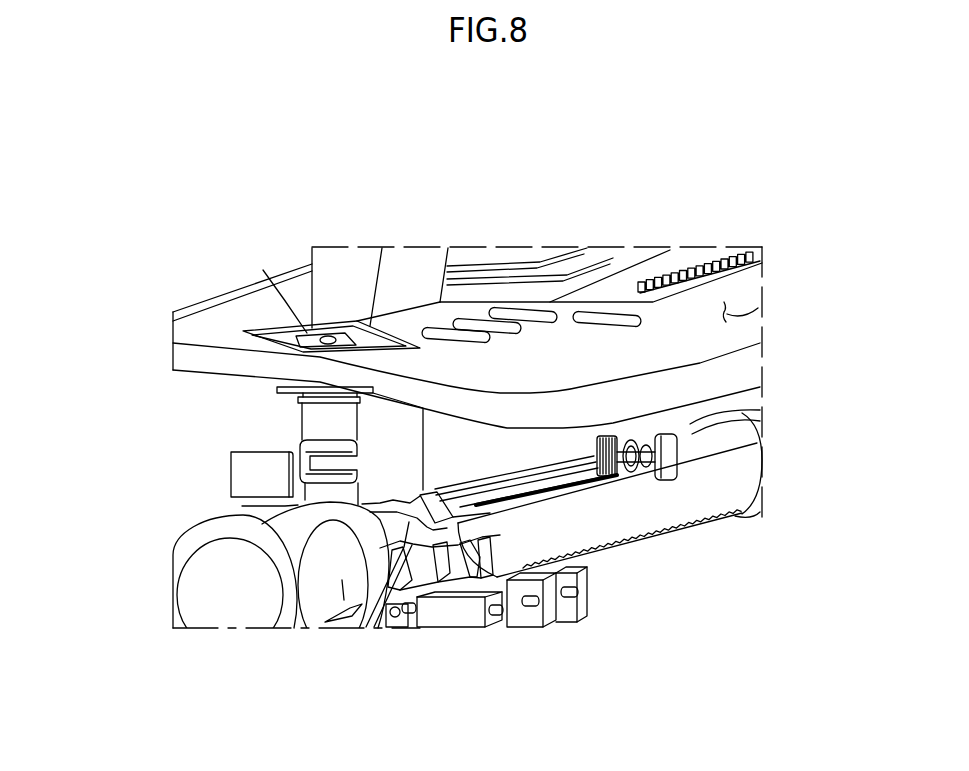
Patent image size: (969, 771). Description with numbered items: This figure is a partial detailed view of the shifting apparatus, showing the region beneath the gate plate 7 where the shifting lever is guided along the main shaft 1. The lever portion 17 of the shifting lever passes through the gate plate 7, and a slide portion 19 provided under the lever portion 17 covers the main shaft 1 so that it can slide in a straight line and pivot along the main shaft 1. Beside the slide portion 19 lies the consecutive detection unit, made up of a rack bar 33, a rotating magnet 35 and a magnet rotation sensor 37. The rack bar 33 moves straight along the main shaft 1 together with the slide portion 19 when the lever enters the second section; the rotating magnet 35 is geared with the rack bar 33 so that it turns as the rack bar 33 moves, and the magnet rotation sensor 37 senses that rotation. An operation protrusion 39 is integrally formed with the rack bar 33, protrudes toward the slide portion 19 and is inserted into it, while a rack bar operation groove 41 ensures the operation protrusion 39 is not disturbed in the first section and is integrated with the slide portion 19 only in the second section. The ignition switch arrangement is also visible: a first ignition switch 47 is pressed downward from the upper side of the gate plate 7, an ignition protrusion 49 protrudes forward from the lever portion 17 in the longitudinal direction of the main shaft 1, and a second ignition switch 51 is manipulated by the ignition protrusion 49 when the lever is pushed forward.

The main shaft 1 is at (343, 580).
The gate plate 7 is at (758, 309).
The lever portion 17 is at (336, 291).
The slide portion 19 is at (242, 506).
The rack bar 33 is at (553, 497).
The rotating magnet 35 is at (640, 477).
The magnet rotation sensor 37 is at (670, 460).
The operation protrusion 39 is at (408, 625).
The rack bar operation groove 41 is at (381, 620).
The first ignition switch 47 is at (277, 388).
The ignition protrusion 49 is at (313, 450).
The second ignition switch 51 is at (243, 477).